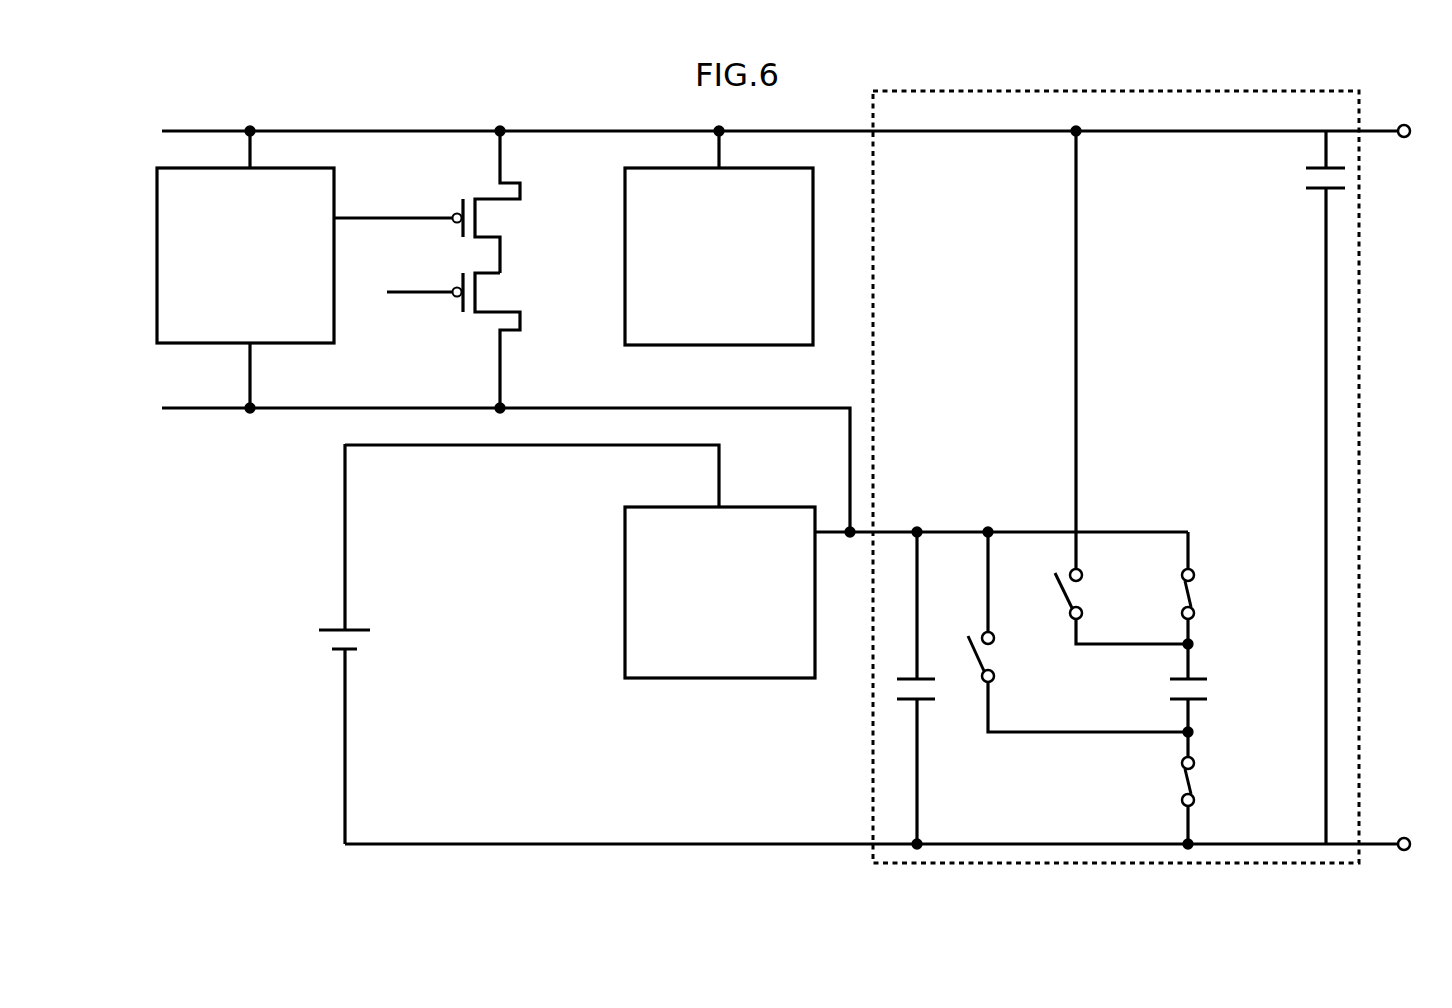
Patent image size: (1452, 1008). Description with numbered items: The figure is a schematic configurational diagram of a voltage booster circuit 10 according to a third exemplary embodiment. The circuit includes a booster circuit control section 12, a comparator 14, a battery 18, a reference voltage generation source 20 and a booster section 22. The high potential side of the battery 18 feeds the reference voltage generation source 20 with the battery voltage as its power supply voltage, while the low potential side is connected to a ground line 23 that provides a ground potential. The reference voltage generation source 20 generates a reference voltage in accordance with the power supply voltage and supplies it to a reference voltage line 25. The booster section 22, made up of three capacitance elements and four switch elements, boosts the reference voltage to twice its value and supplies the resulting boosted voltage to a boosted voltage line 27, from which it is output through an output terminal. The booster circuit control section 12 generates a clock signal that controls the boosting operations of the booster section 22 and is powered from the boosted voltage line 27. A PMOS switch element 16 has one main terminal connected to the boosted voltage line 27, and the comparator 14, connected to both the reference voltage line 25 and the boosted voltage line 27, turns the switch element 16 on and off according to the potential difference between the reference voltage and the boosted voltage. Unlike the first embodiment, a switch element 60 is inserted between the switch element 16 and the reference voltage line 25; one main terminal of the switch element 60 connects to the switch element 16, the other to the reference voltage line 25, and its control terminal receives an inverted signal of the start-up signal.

The voltage booster circuit 10 is at (228, 638).
The booster circuit control section 12 is at (813, 232).
The comparator 14 is at (333, 203).
The switch element 16 is at (488, 182).
The battery 18 is at (326, 614).
The reference voltage generation source 20 is at (745, 506).
The booster section 22 is at (1360, 288).
The ground line 23 is at (637, 843).
The reference voltage line 25 is at (950, 531).
The boosted voltage line 27 is at (776, 131).
The switch element 60 is at (520, 272).